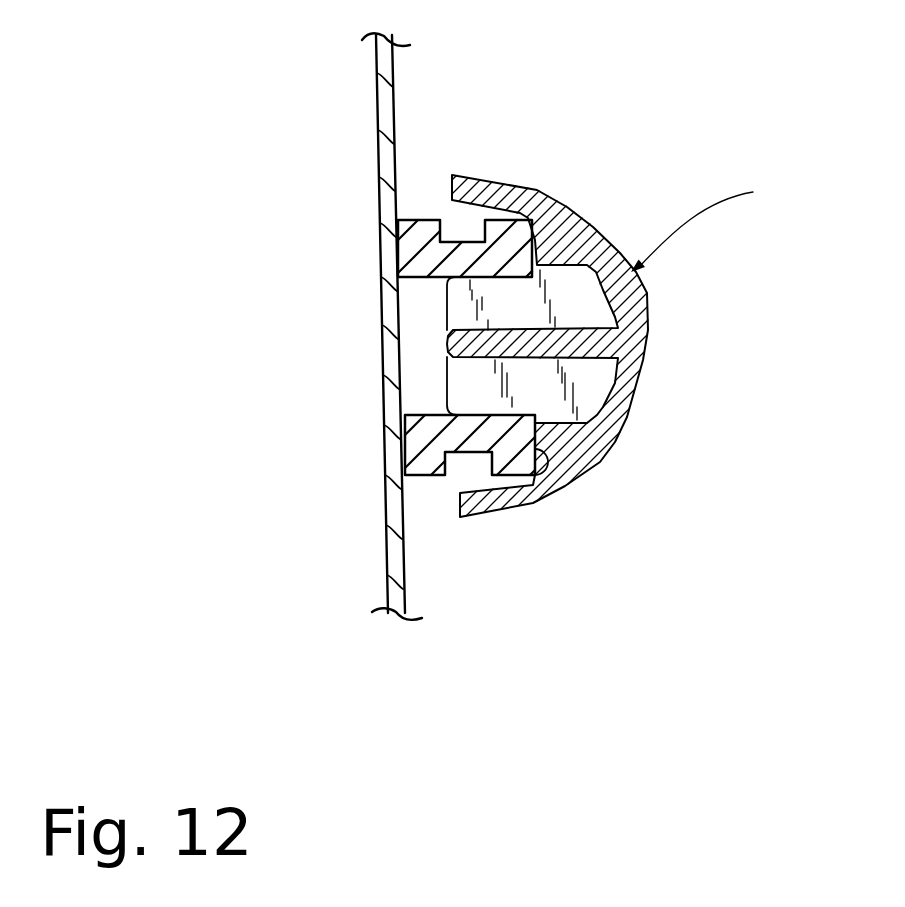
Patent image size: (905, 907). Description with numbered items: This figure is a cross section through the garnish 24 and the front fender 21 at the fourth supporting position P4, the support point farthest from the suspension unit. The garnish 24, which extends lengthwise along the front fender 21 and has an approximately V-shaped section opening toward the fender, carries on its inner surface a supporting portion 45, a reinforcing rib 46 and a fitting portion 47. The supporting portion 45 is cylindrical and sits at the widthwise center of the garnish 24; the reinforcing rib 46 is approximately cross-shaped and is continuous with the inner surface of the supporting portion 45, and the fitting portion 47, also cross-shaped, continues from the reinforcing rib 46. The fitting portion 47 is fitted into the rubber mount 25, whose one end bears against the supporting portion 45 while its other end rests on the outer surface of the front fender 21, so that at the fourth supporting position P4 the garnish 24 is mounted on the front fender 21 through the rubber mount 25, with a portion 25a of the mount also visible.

The front fender 21 is at (377, 145).
The garnish 24 is at (567, 212).
The rubber mount 25 is at (417, 449).
The engagement block / groove (upper) 25a is at (467, 237).
The supporting portion 45 is at (540, 452).
The reinforcing rib 46 is at (589, 391).
The fitting portion 47 is at (452, 341).
The fourth supporting position P4 is at (730, 217).